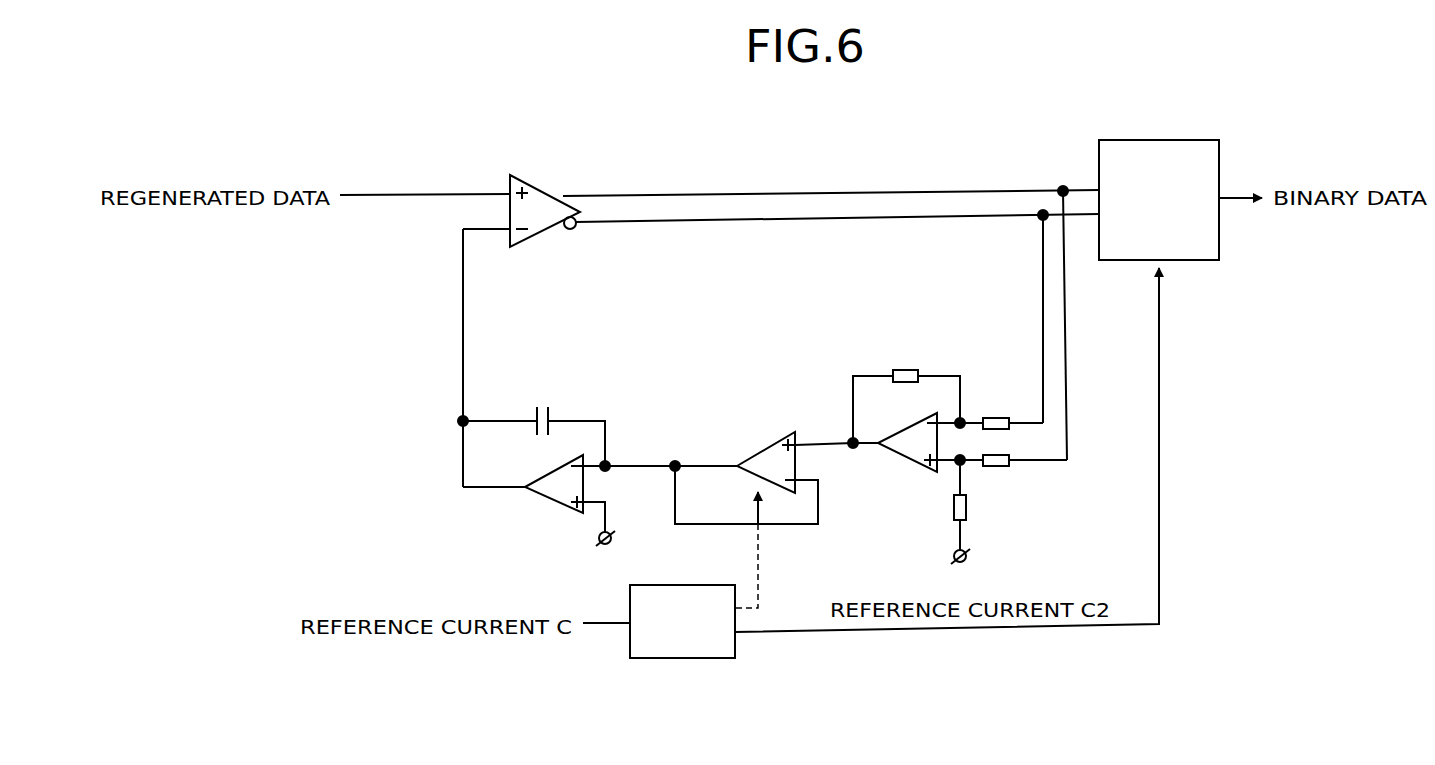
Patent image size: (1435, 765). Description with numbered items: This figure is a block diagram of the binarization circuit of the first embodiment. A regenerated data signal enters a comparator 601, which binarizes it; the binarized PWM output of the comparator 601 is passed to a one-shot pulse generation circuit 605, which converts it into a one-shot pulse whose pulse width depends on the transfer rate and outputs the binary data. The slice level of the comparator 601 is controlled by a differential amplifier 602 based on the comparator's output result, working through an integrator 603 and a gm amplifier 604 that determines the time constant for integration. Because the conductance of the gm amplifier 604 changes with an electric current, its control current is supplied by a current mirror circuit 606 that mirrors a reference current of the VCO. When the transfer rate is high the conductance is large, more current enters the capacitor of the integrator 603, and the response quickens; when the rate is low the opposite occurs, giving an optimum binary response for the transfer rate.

The comparator 601 is at (583, 213).
The differential amplifier 602 is at (957, 467).
The integrator 603 is at (597, 476).
The gm amplifier 604 is at (764, 495).
The one-shot pulse generation circuit 605 is at (1159, 218).
The current mirror circuit 606 is at (685, 640).